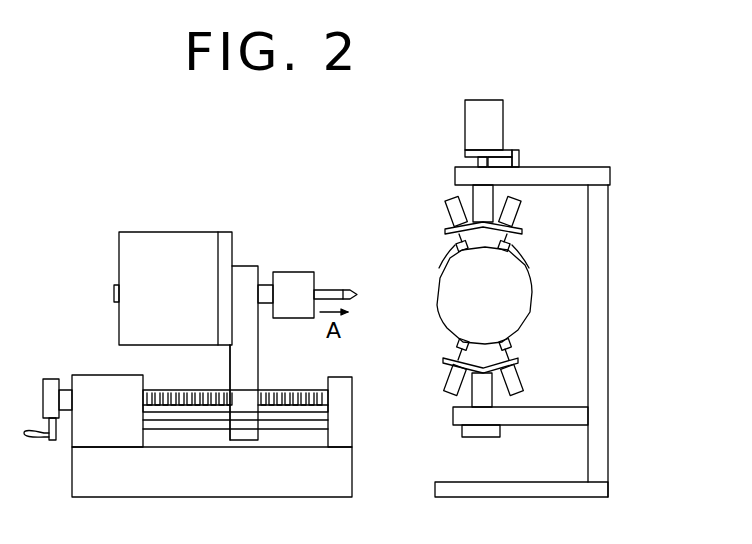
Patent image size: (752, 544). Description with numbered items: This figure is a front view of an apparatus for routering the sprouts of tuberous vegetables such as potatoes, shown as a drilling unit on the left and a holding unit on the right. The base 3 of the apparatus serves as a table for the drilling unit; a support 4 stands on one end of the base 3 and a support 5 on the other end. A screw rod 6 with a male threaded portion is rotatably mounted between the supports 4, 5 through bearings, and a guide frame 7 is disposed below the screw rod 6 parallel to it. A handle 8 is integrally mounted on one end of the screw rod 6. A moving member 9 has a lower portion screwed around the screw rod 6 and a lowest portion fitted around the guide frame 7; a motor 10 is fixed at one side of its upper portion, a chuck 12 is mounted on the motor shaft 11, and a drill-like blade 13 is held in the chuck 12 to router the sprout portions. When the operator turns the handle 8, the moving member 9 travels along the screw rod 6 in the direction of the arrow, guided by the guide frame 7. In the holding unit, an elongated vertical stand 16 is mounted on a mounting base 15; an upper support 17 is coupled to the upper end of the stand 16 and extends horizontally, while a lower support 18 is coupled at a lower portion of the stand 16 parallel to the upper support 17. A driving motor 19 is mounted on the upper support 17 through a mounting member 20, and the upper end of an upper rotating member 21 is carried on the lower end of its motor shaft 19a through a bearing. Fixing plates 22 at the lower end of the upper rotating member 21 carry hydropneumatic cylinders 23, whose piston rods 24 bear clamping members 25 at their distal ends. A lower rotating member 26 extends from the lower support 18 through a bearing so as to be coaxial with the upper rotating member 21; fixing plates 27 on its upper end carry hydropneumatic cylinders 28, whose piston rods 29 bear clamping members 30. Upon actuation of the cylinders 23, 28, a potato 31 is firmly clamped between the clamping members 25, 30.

The base 3 is at (208, 493).
The support 4 is at (98, 375).
The support 5 is at (343, 377).
The screw rod 6 is at (291, 390).
The guide frame 7 is at (303, 433).
The handle 8 is at (49, 379).
The moving member 9 is at (244, 266).
The motor 10 is at (153, 232).
The motor shaft 11 is at (267, 285).
The chuck 12 is at (301, 272).
The drill-like blade 13 is at (337, 290).
The mounting base 15 is at (479, 497).
The stand 16 is at (608, 381).
The upper support 17 is at (558, 172).
The lower support 18 is at (540, 425).
The driving motor 19 is at (465, 106).
The motor shaft 19a is at (478, 162).
The mounting member 20 is at (515, 152).
The upper rotating member 21 is at (470, 196).
The fixing plates 22 is at (450, 232).
The hydropneumatic cylinders 23 is at (445, 212).
The piston rods 24 is at (458, 247).
The clamping members 25 is at (446, 262).
The lower rotating member 26 is at (468, 402).
The fixing plates 27 is at (446, 372).
The hydropneumatic cylinders 28 is at (450, 391).
The piston rods 29 is at (444, 360).
The clamping members 30 is at (458, 341).
The potato 31 is at (437, 308).